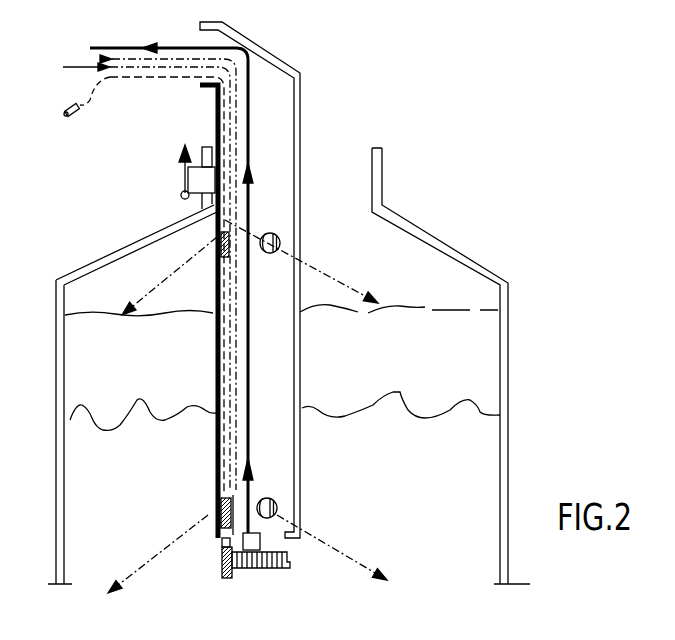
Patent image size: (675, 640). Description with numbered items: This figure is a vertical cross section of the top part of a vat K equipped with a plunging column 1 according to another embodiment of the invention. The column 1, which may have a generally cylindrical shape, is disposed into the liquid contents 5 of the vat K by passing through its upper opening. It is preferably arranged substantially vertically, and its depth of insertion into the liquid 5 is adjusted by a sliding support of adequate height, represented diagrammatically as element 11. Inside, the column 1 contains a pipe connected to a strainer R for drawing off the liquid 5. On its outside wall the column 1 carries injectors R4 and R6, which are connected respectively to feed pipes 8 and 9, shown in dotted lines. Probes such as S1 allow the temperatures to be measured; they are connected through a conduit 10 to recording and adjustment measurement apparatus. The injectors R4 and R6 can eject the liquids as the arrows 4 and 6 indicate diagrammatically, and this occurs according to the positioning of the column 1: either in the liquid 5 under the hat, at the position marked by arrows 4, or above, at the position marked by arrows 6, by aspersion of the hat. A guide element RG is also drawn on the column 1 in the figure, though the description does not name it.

The column 1 is at (302, 99).
The arrows indicating liquid ejection 4 is at (132, 545).
The liquid contents 5 is at (430, 360).
The arrows indicating liquid ejection 6 is at (147, 292).
The feed pipe 8 is at (97, 47).
The feed pipe 9 is at (75, 66).
The conduit 10 is at (73, 117).
The sliding support 11 is at (185, 183).
The vat K is at (503, 438).
The strainer R is at (291, 565).
The injector R4 is at (220, 507).
The injector R6 is at (217, 246).
The guide roller RG is at (272, 228).
The probe S1 is at (222, 576).